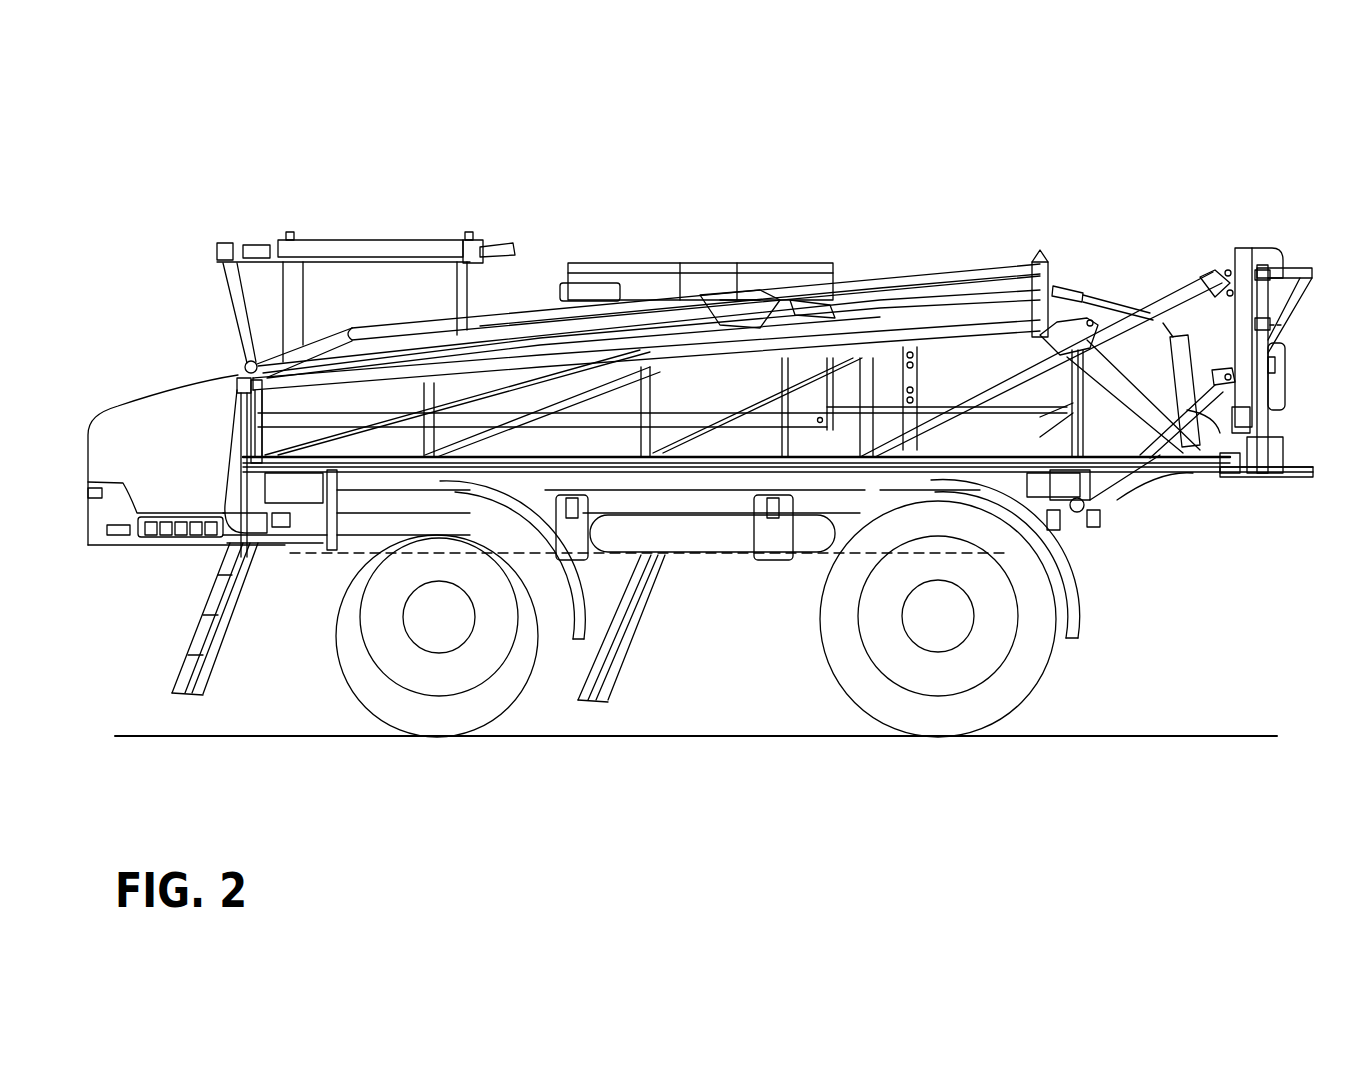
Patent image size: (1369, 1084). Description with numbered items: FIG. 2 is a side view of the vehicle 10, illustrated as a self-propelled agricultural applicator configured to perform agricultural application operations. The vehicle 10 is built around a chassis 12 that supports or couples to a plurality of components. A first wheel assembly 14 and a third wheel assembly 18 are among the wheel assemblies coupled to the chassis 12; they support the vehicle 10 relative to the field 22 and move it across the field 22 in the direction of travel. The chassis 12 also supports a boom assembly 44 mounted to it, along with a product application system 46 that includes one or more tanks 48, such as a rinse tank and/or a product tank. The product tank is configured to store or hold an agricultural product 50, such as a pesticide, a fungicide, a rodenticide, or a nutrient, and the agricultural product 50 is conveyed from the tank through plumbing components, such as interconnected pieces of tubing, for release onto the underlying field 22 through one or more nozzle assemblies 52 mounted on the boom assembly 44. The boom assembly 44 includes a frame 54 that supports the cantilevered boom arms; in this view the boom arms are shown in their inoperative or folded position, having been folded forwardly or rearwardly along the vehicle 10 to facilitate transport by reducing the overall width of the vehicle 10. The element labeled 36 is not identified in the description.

The vehicle 10 is at (1090, 194).
The chassis 12 is at (700, 540).
The first wheel assembly 14 is at (512, 693).
The third wheel assembly 18 is at (1010, 690).
The field 22 is at (1223, 736).
The operator cab rail 36 is at (364, 243).
The boom assembly 44 is at (920, 238).
The product application system 46 is at (678, 249).
The tank 48 is at (588, 297).
The agricultural product 50 is at (640, 296).
The nozzle assembly 52 is at (873, 290).
The frame 54 is at (1290, 251).